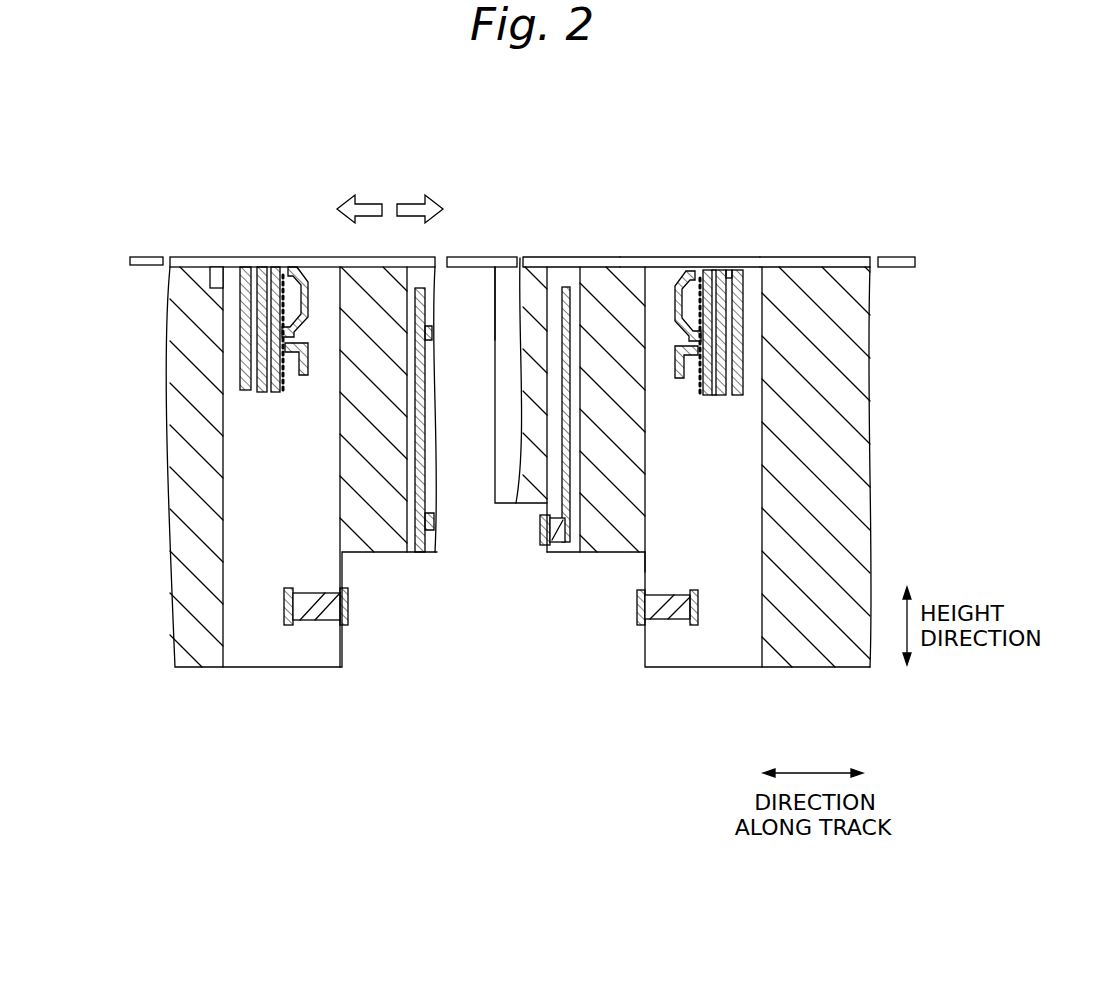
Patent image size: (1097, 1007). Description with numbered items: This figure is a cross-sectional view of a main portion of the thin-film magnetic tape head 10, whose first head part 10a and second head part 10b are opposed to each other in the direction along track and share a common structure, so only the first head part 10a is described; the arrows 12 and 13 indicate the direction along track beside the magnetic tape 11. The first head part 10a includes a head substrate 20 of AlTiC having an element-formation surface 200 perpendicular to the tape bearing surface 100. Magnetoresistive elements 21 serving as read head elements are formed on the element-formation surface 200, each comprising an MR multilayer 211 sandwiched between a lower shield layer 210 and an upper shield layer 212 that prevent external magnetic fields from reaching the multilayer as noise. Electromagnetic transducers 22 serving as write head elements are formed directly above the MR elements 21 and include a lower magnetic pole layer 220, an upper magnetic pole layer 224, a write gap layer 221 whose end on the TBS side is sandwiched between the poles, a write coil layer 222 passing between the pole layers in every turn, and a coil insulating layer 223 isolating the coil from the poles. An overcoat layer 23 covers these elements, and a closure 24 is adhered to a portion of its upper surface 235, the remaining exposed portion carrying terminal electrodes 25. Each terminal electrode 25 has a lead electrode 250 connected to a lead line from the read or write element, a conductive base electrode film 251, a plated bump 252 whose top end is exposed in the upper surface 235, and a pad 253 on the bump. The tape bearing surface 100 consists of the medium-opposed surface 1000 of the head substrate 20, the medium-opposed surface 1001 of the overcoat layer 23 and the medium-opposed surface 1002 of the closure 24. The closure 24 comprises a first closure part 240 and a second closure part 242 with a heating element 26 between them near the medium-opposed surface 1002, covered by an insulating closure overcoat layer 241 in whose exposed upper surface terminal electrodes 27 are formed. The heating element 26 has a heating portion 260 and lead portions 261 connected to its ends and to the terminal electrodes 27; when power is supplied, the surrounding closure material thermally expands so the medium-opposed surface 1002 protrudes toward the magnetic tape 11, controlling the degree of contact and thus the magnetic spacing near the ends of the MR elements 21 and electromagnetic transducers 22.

The tape head 10 is at (583, 451).
The first head part 10a is at (638, 685).
The second head part 10b is at (345, 685).
The magnetic tape 11 is at (320, 257).
The tape running direction 12 is at (363, 207).
The tape running direction 13 is at (410, 207).
The head substrate 20 is at (198, 640).
The element-formation surface 200 is at (760, 653).
The magnetoresistive element 21 is at (552, 267).
The lower shield layer 210 is at (742, 272).
The MR multilayer 211 is at (733, 272).
The upper shield layer 212 is at (722, 272).
The electromagnetic transducer 22 is at (530, 266).
The lower magnetic pole layer 220 is at (749, 285).
The write gap layer 221 is at (707, 272).
The write coil layer 222 is at (699, 272).
The coil insulating layer 223 is at (683, 272).
The upper magnetic pole layer 224 is at (676, 272).
The overcoat layer 23 is at (317, 647).
The upper surface of the overcoat layer 235 is at (645, 565).
The closure 24 is at (671, 437).
The first closure part 240 is at (608, 502).
The closure overcoat layer 241 is at (555, 465).
The second closure part 242 is at (537, 440).
The terminal electrode 25 is at (491, 634).
The lead electrode 250 is at (660, 626).
The base electrode film 251 is at (684, 603).
The bump 252 is at (653, 607).
The pad 253 is at (642, 597).
The heating element 26 is at (487, 286).
The heating portion 260 is at (558, 410).
The lead portion 261 is at (495, 330).
The terminal electrode 27 is at (540, 533).
The tape bearing surface 100 is at (559, 177).
The medium-opposed surface of the head substrate 1000 is at (868, 258).
The medium-opposed surface of the overcoat layer 1001 is at (659, 258).
The medium-opposed surface of the closure 1002 is at (596, 258).